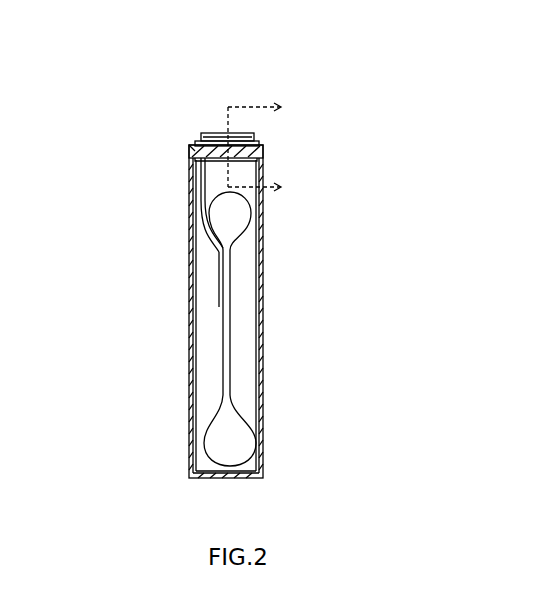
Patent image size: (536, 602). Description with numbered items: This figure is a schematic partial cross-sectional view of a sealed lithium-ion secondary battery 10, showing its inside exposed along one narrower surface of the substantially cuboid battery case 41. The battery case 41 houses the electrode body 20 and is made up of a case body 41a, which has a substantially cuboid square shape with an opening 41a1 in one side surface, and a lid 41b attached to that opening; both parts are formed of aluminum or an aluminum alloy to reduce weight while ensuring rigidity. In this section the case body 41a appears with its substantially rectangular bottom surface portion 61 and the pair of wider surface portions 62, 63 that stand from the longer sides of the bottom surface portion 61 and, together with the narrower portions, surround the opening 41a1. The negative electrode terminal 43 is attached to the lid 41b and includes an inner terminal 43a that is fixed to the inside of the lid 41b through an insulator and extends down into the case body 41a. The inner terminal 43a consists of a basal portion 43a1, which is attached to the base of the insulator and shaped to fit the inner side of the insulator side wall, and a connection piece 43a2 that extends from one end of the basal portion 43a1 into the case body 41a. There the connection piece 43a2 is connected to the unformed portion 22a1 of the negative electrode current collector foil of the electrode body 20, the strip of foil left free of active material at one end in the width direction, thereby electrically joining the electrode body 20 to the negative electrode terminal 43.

The lithium-ion secondary battery 10 is at (230, 285).
The electrode body 20 is at (226, 341).
The unformed portion 22a1 is at (231, 329).
The battery case 41 is at (227, 177).
The case body 41a is at (228, 177).
The opening 41a1 is at (192, 143).
The lid 41b is at (259, 142).
The negative electrode terminal 43 is at (222, 187).
The inner terminal 43a is at (222, 234).
The basal portion 43a1 is at (262, 166).
The connection piece 43a2 is at (218, 286).
The bottom surface portion 61 is at (225, 480).
The wider surface portion 62 is at (188, 330).
The wider surface portion 63 is at (265, 285).